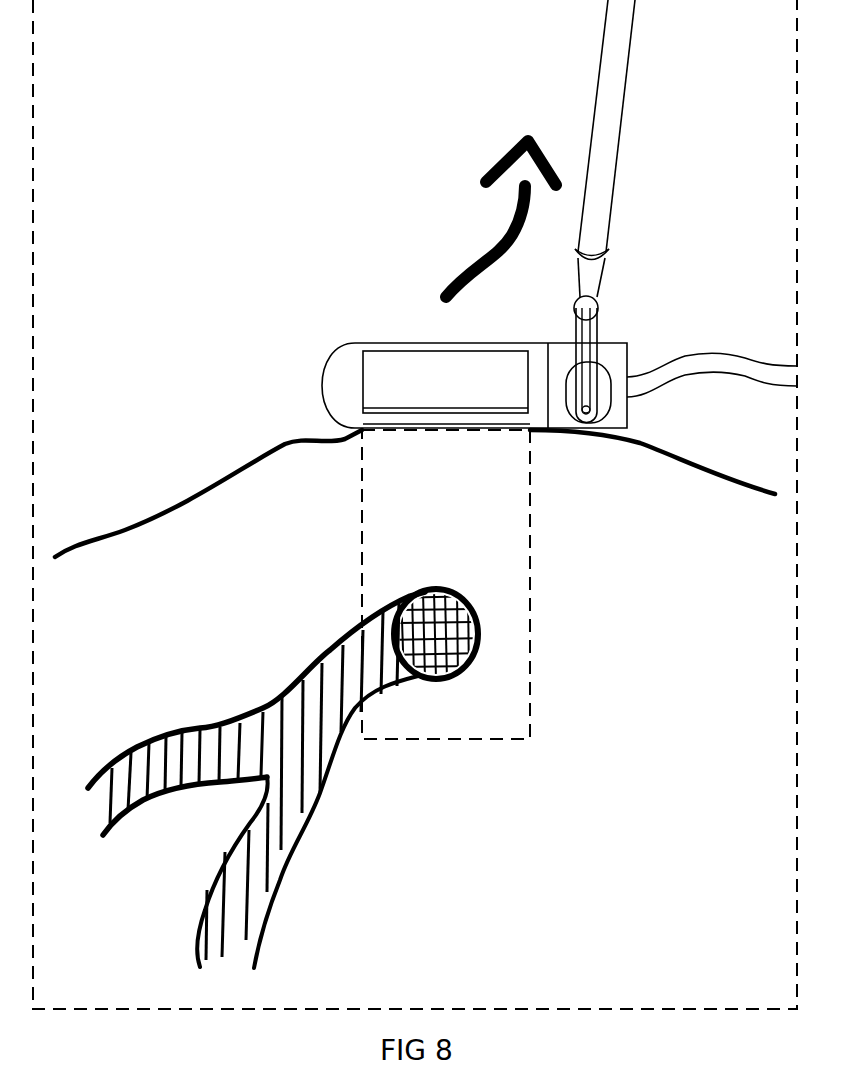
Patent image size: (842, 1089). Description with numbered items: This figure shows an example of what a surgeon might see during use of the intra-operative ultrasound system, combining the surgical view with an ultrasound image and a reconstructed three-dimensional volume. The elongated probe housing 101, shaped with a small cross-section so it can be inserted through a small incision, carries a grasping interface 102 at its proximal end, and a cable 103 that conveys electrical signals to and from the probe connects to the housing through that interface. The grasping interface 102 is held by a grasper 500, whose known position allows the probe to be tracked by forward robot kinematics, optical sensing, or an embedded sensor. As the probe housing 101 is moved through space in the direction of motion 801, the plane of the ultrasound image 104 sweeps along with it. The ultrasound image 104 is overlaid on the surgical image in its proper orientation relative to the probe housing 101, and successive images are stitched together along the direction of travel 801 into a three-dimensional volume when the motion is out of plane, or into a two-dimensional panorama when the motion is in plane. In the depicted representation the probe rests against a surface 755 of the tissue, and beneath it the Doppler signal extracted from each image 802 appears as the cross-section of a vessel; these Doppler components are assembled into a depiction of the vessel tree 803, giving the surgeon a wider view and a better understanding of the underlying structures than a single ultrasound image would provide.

The probe housing 101 is at (345, 341).
The grasping interface 102 is at (557, 340).
The cable 103 is at (744, 349).
The ultrasound image 104 is at (532, 472).
The grasper 500 is at (617, 179).
The skin surface 755 is at (175, 525).
The direction of motion 801 is at (501, 219).
The Doppler signal image 802 is at (438, 584).
The vessel tree 803 is at (325, 793).